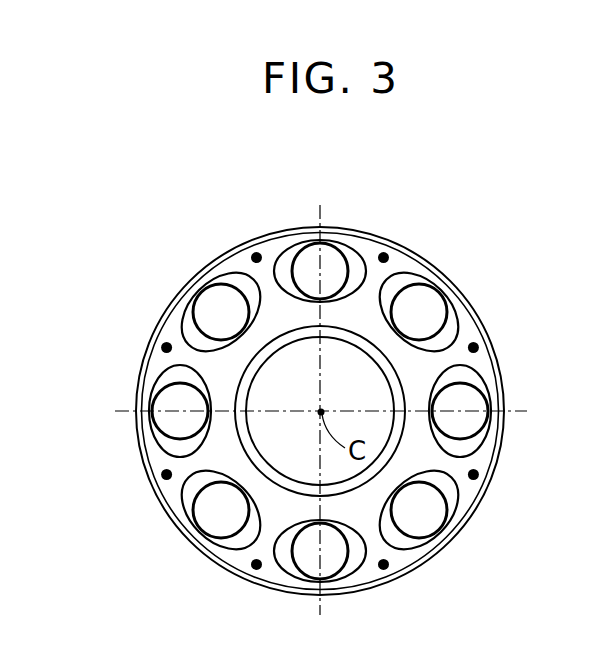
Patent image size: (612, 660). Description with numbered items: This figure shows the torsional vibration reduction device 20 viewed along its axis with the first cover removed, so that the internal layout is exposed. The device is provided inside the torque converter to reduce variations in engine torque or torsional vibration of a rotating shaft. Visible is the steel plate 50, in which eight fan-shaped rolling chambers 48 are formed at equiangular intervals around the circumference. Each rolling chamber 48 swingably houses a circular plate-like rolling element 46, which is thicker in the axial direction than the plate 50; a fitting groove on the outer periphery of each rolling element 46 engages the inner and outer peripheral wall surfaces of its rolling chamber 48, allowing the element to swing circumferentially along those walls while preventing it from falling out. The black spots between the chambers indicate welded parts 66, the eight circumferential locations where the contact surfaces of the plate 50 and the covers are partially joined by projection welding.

The torsional vibration reduction device 20 is at (104, 256).
The rolling element 46 is at (220, 307).
The rolling chamber 48 is at (229, 272).
The plate 50 is at (501, 366).
The welded part 66 is at (251, 254).